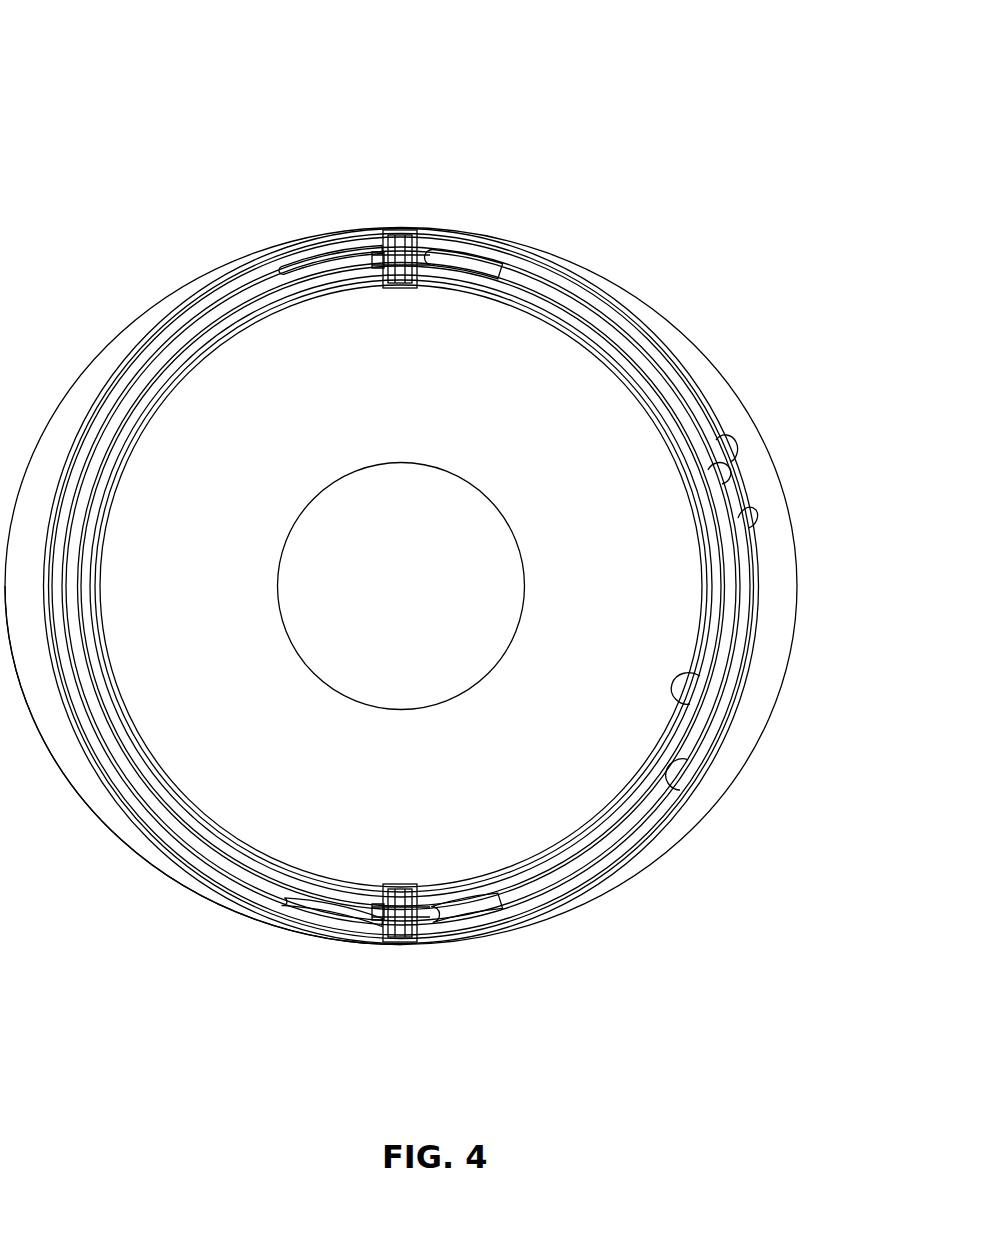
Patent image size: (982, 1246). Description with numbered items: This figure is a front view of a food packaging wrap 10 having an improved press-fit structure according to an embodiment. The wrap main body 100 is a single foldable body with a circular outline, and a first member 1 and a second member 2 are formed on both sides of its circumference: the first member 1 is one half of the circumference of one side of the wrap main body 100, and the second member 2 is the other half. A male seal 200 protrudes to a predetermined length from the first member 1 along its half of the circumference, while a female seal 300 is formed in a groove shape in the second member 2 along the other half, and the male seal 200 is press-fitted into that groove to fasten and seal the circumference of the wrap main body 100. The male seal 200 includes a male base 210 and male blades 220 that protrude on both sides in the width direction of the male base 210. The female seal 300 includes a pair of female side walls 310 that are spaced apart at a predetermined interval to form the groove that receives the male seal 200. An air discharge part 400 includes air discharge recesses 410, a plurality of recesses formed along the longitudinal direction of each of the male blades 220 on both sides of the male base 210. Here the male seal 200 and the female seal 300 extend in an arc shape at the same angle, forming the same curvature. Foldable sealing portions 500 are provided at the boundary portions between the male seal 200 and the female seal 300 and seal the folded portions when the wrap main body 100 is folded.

The food packaging wrap 10 is at (73, 44).
The wrap main body 100 is at (205, 432).
The first member 1 is at (632, 300).
The second member 2 is at (115, 822).
The female seal 300 is at (337, 152).
The female side walls 310 is at (283, 275).
The foldable sealing portions 500 is at (400, 228).
The male seal 200 is at (867, 373).
The male base 210 is at (712, 468).
The male blades 220 is at (740, 517).
The air discharge part 400 is at (790, 768).
The air discharge recesses 410 is at (672, 688).